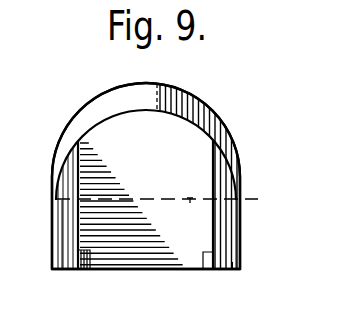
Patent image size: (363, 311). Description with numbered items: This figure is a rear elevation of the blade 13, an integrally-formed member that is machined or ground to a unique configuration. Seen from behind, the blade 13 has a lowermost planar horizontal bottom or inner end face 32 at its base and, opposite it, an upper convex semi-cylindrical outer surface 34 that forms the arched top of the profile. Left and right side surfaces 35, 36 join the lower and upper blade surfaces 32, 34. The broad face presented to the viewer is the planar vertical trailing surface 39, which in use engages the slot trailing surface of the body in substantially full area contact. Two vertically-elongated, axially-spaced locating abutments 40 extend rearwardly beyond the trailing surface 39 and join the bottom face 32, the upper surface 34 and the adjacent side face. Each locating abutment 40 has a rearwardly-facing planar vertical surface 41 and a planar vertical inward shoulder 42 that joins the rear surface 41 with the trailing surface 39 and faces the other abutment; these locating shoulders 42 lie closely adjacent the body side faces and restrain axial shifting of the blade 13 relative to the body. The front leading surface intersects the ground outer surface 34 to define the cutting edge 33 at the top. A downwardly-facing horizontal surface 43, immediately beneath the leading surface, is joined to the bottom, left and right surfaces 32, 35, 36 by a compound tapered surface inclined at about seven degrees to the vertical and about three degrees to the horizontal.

The blade 13 is at (214, 101).
The bottom or inner end face 32 is at (137, 272).
The cutting edge 33 is at (158, 60).
The outer surface 34 is at (116, 94).
The left side surface 35 is at (52, 232).
The right side surface 36 is at (244, 246).
The trailing surface 39 is at (157, 156).
The locating abutment 40 is at (60, 271).
The rearwardly-facing planar vertical surface 41 is at (64, 251).
The locating shoulder 42 is at (86, 270).
The downwardly-facing horizontal surface 43 is at (170, 203).